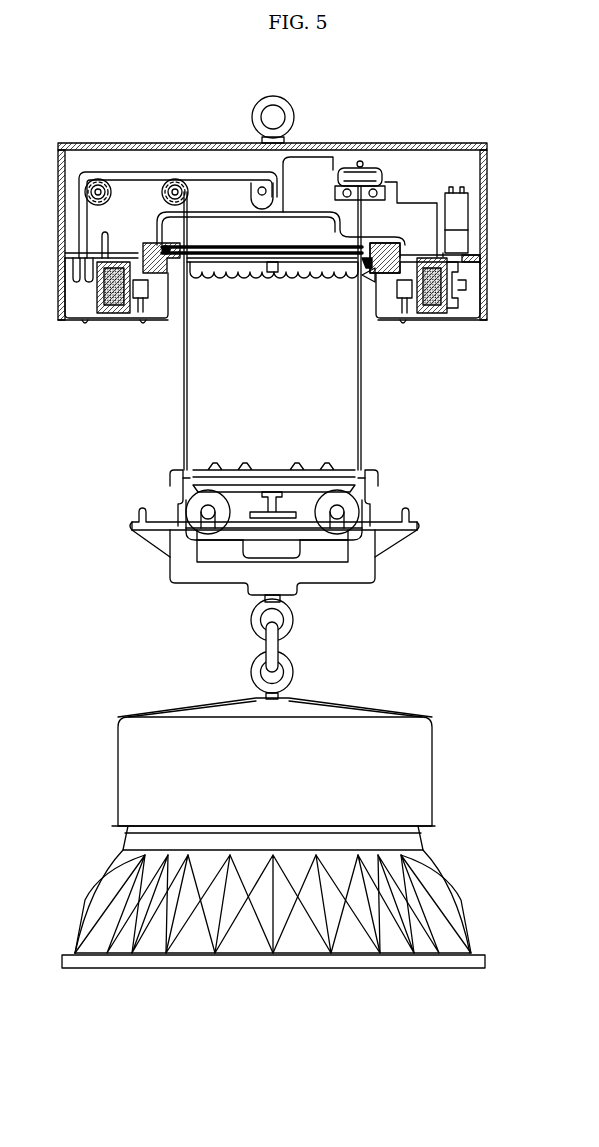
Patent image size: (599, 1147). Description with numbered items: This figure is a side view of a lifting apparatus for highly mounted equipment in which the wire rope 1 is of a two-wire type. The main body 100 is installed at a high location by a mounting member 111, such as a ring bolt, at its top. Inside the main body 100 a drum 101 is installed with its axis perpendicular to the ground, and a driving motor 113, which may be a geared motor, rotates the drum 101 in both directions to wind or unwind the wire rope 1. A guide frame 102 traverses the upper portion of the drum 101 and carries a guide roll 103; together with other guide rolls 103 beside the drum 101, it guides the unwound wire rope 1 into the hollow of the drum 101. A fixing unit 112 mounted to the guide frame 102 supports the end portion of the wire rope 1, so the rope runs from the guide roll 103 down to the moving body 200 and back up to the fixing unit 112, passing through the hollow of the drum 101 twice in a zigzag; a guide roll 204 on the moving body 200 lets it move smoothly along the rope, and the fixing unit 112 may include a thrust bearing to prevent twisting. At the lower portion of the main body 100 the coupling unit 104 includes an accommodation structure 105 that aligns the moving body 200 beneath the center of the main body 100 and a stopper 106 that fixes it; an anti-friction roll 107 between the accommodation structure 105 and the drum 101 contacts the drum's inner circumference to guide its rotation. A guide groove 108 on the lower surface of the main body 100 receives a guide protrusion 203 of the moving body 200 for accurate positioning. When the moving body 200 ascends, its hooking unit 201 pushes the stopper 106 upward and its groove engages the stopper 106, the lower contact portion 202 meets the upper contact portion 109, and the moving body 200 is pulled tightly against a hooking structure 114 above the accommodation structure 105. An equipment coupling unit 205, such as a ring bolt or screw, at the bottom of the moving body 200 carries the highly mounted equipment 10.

The wire rope 1 is at (184, 385).
The highly mounted equipment 10 is at (454, 751).
The main body 100 is at (510, 189).
The drum 101 is at (110, 262).
The guide frame 102 is at (217, 192).
The guide roll 103 is at (160, 200).
The coupling unit 104 is at (306, 287).
The accommodation structure 105 is at (358, 338).
The stopper 106 is at (358, 297).
The anti-friction roll 107 is at (405, 306).
The guide groove 108 is at (147, 316).
The upper contact portion 109 is at (234, 292).
The mounting member 111 is at (318, 92).
The fixing unit 112 is at (402, 184).
The driving motor 113 is at (458, 216).
The hooking structure 114 is at (455, 270).
The moving body 200 is at (426, 536).
The hooking unit 201 is at (388, 465).
The lower contact portion 202 is at (309, 456).
The guide protrusion 203 is at (140, 512).
The guide roll 204 is at (197, 503).
The equipment coupling unit 205 is at (297, 618).